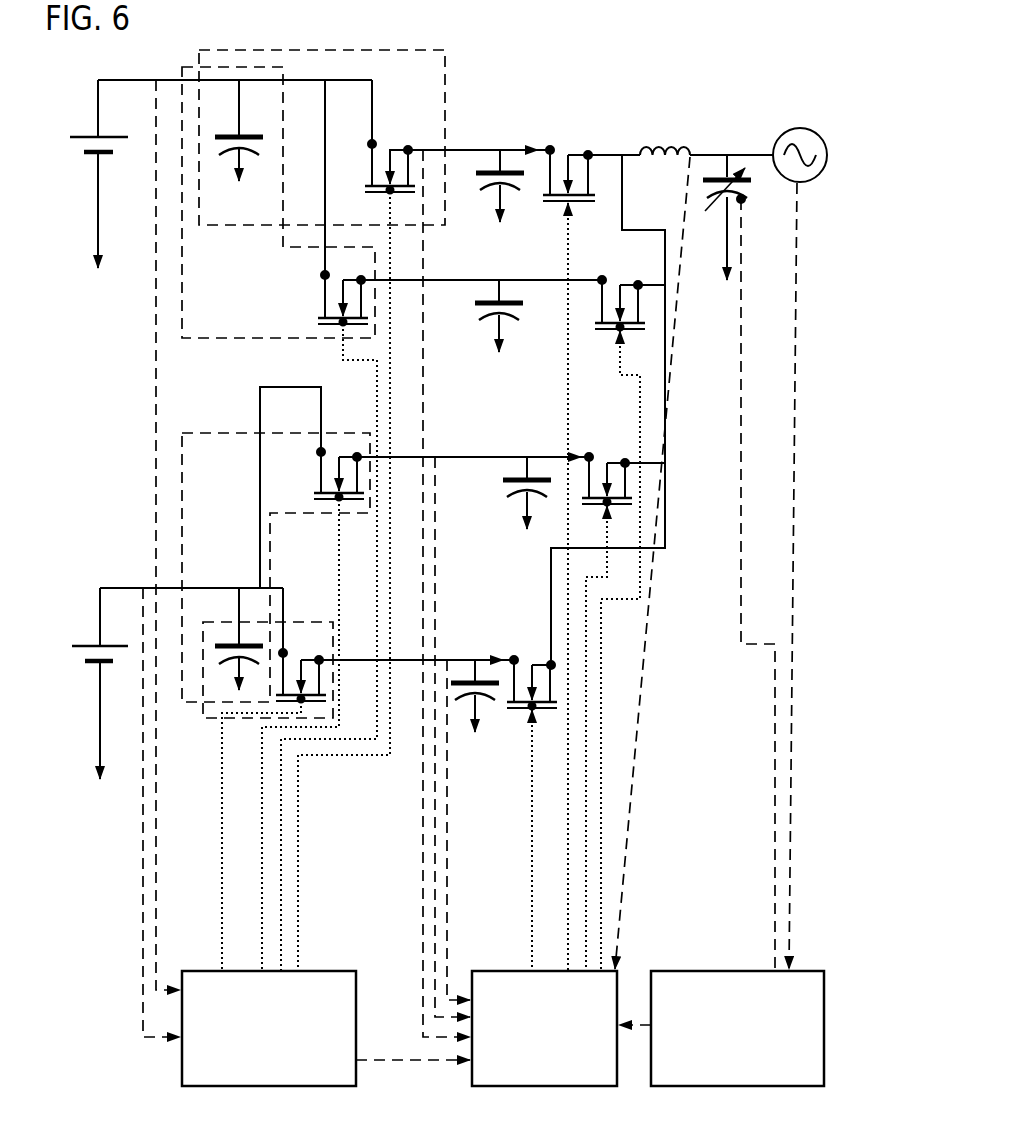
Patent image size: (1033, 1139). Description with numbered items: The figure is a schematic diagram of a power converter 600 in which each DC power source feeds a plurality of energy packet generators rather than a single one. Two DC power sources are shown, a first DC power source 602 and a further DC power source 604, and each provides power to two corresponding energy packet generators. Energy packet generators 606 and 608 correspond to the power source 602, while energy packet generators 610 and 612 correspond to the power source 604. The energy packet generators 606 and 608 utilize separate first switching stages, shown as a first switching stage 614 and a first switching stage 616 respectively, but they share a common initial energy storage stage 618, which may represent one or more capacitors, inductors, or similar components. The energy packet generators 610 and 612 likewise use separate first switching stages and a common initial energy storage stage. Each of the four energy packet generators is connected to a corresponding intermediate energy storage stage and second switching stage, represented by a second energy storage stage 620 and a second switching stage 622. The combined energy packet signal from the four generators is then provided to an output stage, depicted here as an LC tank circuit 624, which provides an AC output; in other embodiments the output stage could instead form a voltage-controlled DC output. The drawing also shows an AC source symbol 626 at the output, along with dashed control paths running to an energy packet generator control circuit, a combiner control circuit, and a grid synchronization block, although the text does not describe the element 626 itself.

The power converter 600 is at (448, 546).
The DC power source V1 602 is at (102, 153).
The DC power source VN 604 is at (104, 662).
The energy packet generator 606 is at (321, 50).
The energy packet generator 608 is at (192, 67).
The energy packet generator 610 is at (205, 433).
The energy packet generator 612 is at (289, 622).
The first switching stage 614 is at (380, 198).
The first switching stage 616 is at (330, 321).
The initial energy storage stage 618 is at (241, 137).
The second energy storage stage 620 is at (488, 177).
The second switching stage 622 is at (577, 200).
The LC tank circuit 624 is at (707, 130).
The AC grid 626 is at (781, 134).